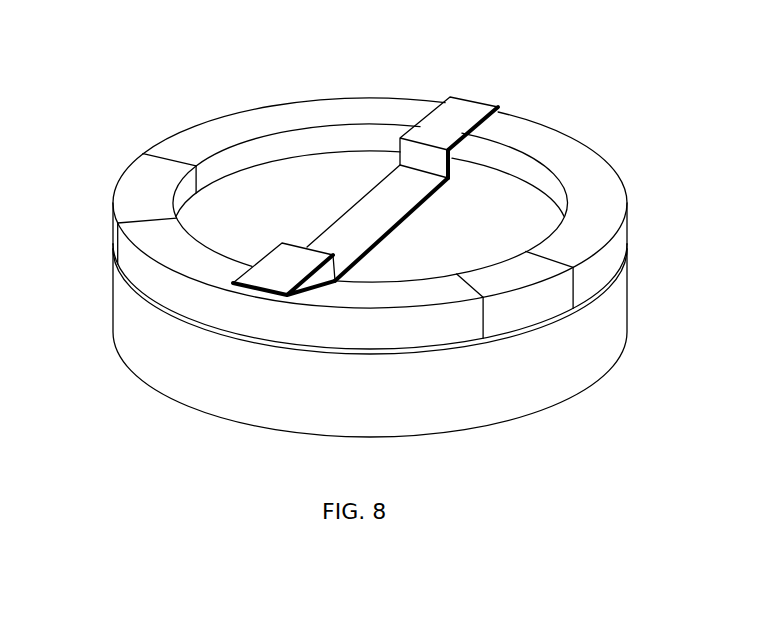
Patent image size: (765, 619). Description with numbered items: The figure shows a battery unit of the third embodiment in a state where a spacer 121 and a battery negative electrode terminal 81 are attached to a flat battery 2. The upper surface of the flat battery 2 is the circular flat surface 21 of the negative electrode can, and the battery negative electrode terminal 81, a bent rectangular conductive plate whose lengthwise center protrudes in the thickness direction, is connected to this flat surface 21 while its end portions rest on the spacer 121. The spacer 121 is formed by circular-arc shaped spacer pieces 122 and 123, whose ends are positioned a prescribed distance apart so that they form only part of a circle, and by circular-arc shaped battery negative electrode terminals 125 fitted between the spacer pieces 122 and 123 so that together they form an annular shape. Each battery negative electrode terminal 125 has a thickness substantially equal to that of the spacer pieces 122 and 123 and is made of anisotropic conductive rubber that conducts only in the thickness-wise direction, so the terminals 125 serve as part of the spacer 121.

The flat battery 2 is at (589, 406).
The flat surface 21 is at (328, 178).
The battery negative electrode terminal 81 is at (480, 90).
The spacer 121 is at (582, 128).
The spacer piece 122 is at (240, 123).
The spacer piece 123 is at (178, 296).
The battery negative electrode terminal 125 is at (143, 168).